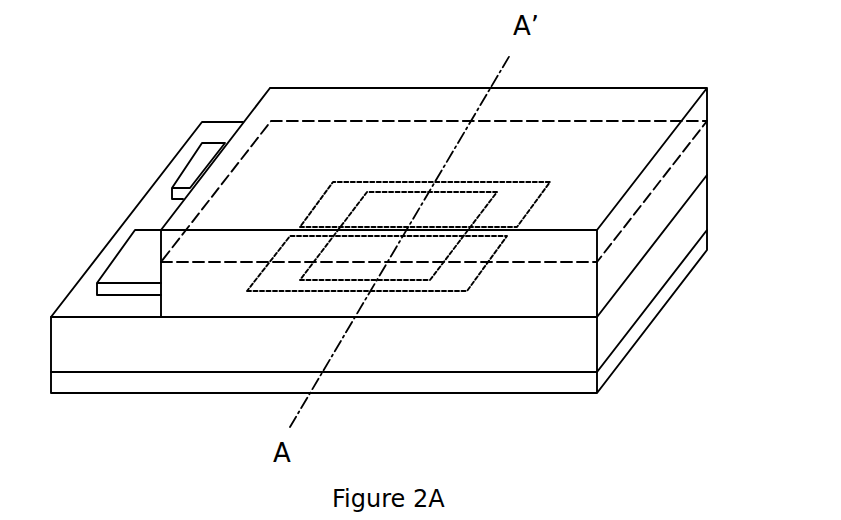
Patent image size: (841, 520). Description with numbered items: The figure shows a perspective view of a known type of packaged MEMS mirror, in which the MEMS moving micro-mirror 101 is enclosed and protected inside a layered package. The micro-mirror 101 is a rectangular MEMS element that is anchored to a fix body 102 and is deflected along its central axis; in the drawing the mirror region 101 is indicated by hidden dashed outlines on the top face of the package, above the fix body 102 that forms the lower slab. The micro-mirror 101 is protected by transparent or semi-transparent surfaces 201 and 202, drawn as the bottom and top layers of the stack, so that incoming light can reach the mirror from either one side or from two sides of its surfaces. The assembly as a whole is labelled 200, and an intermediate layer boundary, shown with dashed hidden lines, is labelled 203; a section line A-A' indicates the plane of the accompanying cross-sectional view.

The MEMS moving micro-mirror 101 is at (451, 208).
The fix body 102 is at (619, 317).
The sensor device package 200 is at (136, 262).
The transparent or semi-transparent surface 201 is at (118, 382).
The transparent or semi-transparent surface 202 is at (680, 101).
The intermediate layer 203 is at (692, 175).